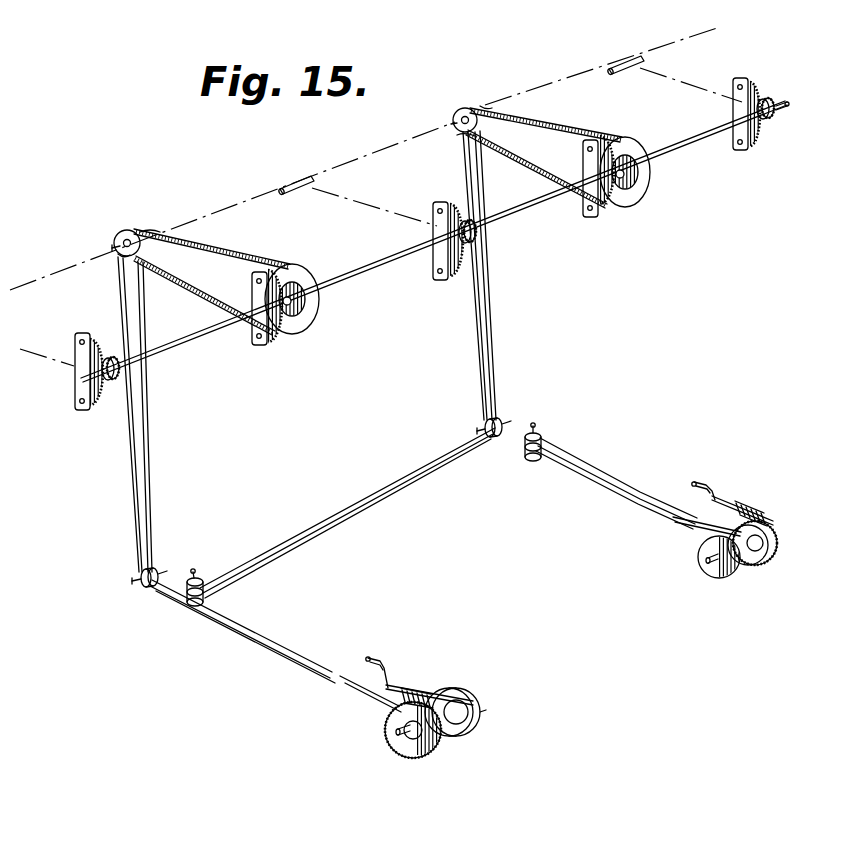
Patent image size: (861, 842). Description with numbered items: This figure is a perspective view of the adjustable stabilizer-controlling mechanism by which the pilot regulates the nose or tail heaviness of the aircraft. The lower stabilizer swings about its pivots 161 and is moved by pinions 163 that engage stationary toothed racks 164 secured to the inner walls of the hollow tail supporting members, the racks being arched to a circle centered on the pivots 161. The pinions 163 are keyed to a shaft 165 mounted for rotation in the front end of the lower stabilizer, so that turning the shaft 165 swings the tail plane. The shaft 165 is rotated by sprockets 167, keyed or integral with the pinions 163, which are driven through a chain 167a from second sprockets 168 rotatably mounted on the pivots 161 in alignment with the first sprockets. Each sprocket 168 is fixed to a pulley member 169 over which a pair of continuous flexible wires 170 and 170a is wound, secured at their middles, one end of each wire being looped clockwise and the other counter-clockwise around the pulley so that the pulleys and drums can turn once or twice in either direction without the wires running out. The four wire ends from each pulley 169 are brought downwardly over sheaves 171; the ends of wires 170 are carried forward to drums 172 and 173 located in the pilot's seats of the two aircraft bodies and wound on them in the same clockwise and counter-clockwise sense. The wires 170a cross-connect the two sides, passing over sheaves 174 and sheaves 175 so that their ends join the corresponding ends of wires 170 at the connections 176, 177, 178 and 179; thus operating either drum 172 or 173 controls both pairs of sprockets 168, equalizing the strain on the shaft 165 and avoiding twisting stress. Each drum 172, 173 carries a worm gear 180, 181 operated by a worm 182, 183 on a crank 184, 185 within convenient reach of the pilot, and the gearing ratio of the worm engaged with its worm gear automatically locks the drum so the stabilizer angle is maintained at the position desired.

The pivots 161 is at (126, 230).
The pinions 163 is at (112, 352).
The stationary toothed racks 164 is at (84, 405).
The shaft 165 is at (363, 270).
The sprockets 167 is at (305, 313).
The chain 167a is at (237, 253).
The second sprockets 168 is at (141, 233).
The pulley member 169 is at (122, 256).
The continuous flexible wires 170 is at (140, 407).
The continuous flexible wires 170a is at (153, 448).
The sheaves 171 is at (147, 588).
The drum 172 is at (715, 578).
The drum 173 is at (458, 701).
The sheaves 174 is at (538, 432).
The sheaves 175 is at (198, 579).
The connection 176 is at (288, 650).
The connection 177 is at (628, 493).
The connection 178 is at (285, 653).
The connection 179 is at (620, 490).
The worm gear 180 is at (765, 563).
The worm gear 181 is at (415, 758).
The worm 182 is at (750, 508).
The worm 183 is at (418, 697).
The crank 184 is at (713, 495).
The crank 185 is at (382, 667).